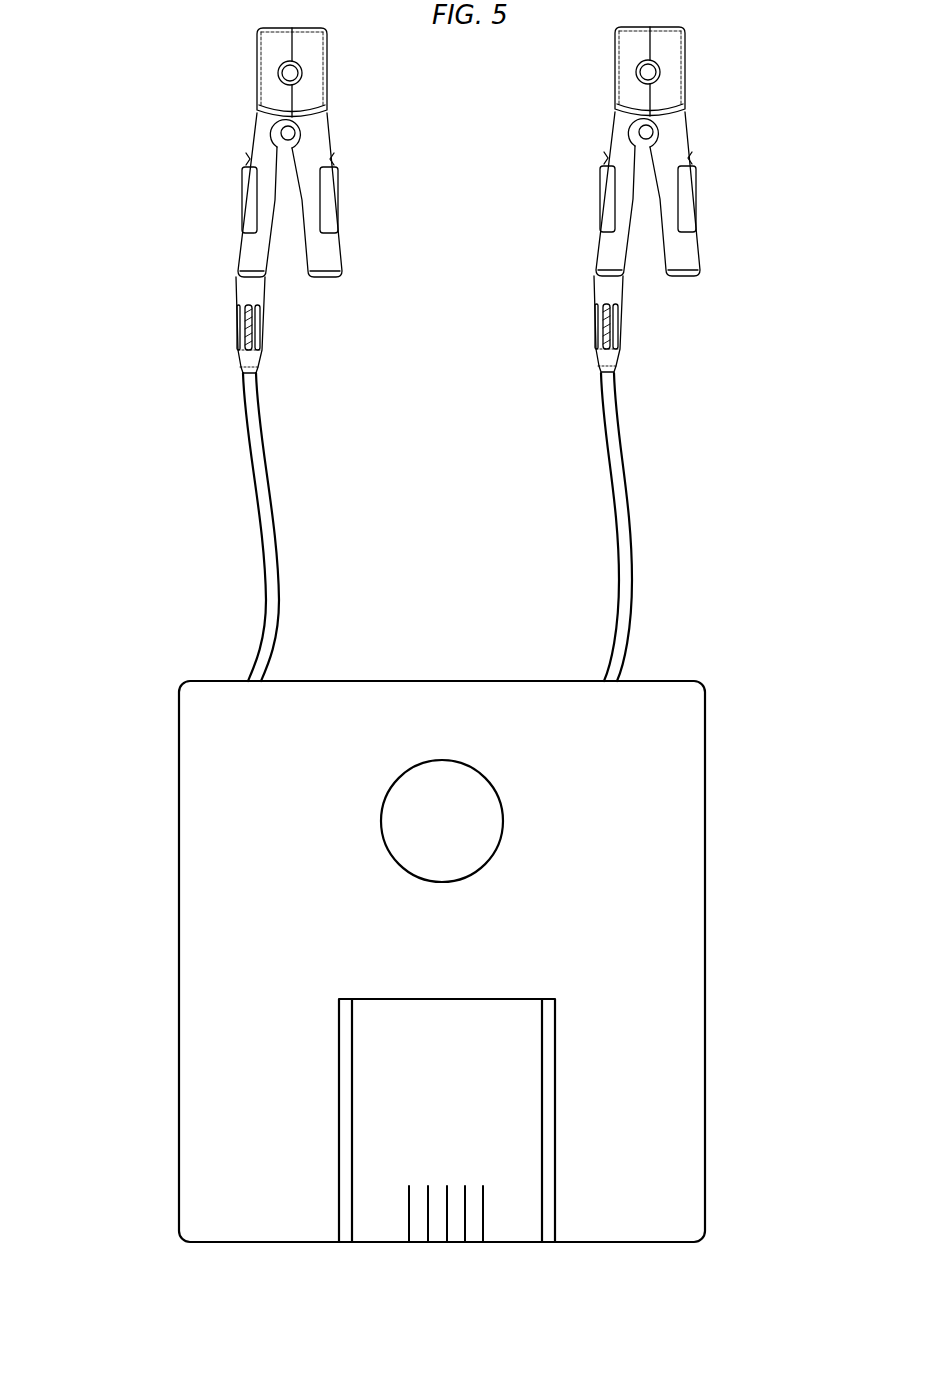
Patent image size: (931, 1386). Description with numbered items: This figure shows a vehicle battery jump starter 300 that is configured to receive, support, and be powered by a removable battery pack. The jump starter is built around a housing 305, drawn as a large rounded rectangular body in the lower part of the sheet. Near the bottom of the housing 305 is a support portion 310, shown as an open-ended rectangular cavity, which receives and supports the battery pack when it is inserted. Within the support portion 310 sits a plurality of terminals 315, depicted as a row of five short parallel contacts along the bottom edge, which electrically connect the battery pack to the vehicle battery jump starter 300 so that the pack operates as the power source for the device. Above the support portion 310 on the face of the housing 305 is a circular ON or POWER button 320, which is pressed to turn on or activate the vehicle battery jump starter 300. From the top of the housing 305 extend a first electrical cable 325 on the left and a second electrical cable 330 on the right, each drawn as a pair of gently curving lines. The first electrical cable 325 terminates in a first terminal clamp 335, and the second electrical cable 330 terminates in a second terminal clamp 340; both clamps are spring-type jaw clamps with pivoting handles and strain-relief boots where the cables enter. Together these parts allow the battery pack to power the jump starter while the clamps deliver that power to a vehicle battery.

The vehicle battery jump starter 300 is at (168, 334).
The housing 305 is at (705, 824).
The support portion 310 is at (568, 1024).
The plurality of terminals 315 is at (497, 1256).
The ON or POWER button 320 is at (502, 798).
The first electrical cable 325 is at (263, 535).
The second electrical cable 330 is at (629, 501).
The first terminal clamp 335 is at (344, 200).
The second terminal clamp 340 is at (701, 201).